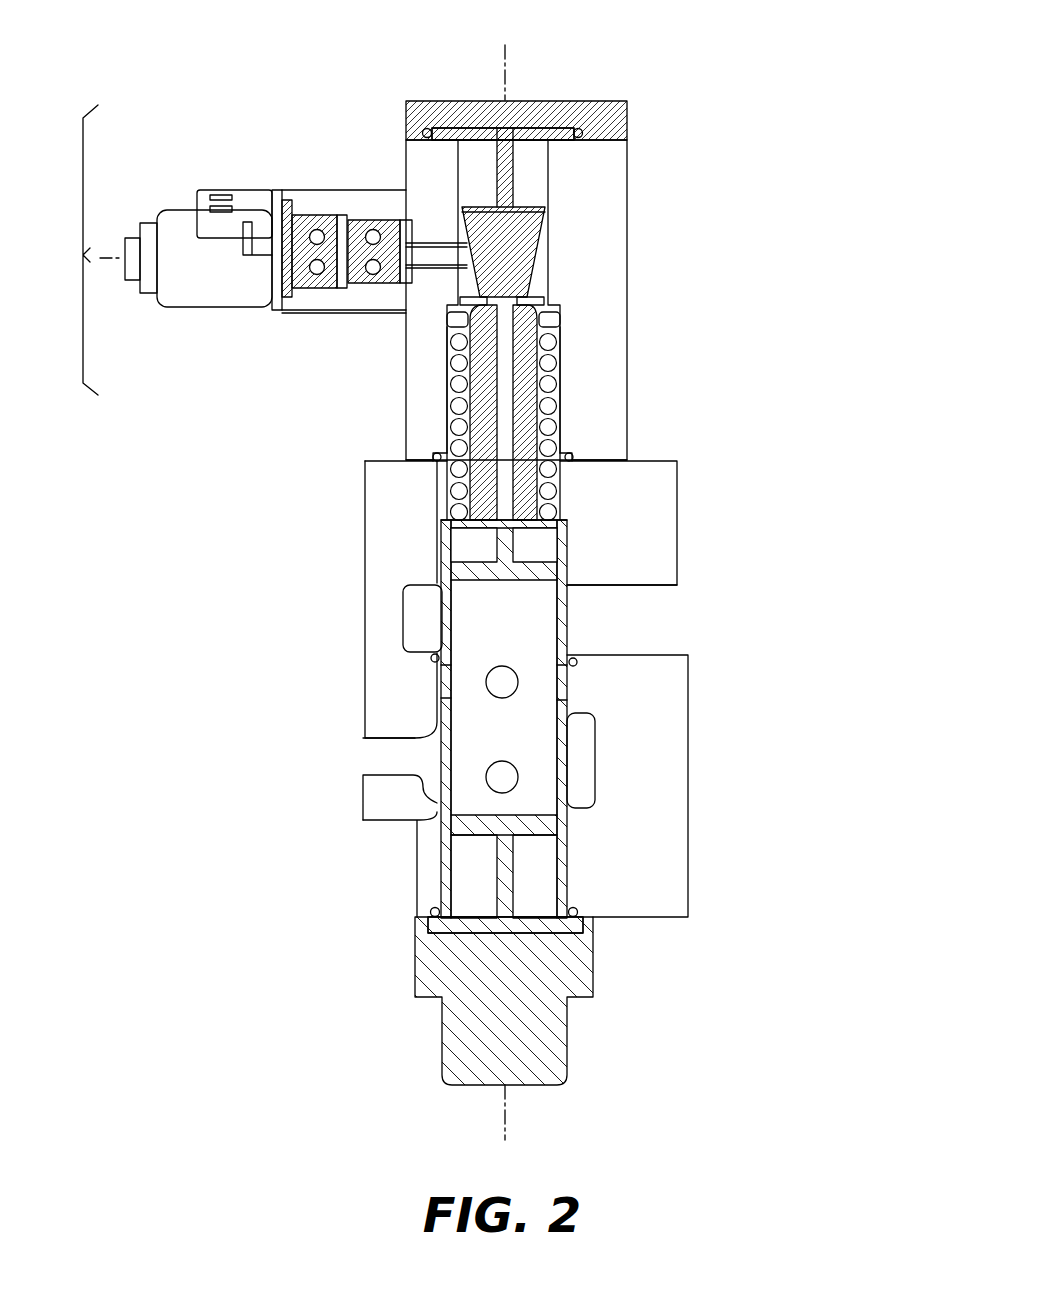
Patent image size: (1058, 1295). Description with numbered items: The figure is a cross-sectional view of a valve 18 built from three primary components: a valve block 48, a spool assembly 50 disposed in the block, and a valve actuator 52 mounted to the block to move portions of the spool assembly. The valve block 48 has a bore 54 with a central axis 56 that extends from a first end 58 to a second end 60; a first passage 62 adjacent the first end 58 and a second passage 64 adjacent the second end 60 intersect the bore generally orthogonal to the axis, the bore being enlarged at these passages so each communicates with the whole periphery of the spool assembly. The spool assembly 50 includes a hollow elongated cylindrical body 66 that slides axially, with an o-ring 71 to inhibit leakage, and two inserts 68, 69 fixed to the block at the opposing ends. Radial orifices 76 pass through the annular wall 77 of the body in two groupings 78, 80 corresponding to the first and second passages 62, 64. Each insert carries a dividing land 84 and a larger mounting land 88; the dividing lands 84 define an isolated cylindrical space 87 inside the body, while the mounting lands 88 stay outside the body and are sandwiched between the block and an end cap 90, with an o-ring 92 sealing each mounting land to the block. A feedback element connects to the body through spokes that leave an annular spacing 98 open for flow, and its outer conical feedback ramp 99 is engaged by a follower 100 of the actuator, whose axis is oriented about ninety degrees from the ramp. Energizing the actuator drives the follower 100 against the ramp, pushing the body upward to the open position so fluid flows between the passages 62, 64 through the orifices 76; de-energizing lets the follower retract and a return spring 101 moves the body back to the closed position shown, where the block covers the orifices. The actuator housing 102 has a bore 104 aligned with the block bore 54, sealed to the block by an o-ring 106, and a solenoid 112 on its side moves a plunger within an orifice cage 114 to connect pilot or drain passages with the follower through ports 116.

The valve 18 is at (820, 60).
The valve block 48 is at (614, 521).
The spool assembly 50 is at (584, 866).
The valve actuator 52 is at (62, 250).
The bore 54 is at (449, 880).
The central axis 56 is at (507, 1100).
The first end 58 is at (325, 483).
The second end 60 is at (275, 897).
The first passage 62 is at (614, 633).
The second passage 64 is at (387, 765).
The elongated cylindrical body 66 is at (568, 833).
The insert 68 is at (450, 540).
The insert 69 is at (502, 867).
The o-ring 71 is at (578, 665).
The radial orifices 76 is at (450, 700).
The annular wall 77 is at (440, 612).
The orifice grouping 78 is at (428, 682).
The orifice grouping 80 is at (427, 803).
The dividing land 84 is at (478, 583).
The isolated cylindrical space 87 is at (537, 647).
The mounting land 88 is at (460, 110).
The end cap 90 is at (594, 108).
The o-ring 92 is at (595, 140).
The annular spacing 98 is at (533, 545).
The conical feedback ramp 99 is at (462, 300).
The follower 100 is at (425, 255).
The return spring 101 is at (446, 375).
The actuator housing 102 is at (576, 378).
The bore 104 is at (550, 265).
The o-ring 106 is at (586, 458).
The solenoid 112 is at (201, 281).
The orifice cage 114 is at (315, 288).
The ports 116 is at (372, 229).